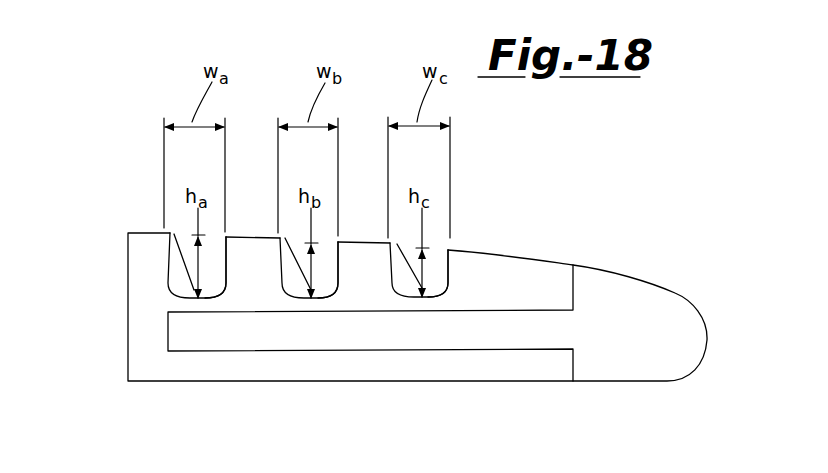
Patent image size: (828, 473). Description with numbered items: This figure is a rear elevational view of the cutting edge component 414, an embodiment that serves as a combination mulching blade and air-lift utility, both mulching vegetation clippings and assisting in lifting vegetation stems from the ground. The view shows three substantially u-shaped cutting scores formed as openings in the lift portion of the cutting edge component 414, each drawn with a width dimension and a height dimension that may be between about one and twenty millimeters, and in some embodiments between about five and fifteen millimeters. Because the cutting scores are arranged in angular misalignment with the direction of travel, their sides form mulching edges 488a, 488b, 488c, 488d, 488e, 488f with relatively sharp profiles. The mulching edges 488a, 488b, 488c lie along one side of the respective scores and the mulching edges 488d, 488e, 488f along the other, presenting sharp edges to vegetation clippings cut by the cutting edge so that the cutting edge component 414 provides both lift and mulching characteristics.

The cutting edge component 414 is at (596, 252).
The mulching edge 488a is at (172, 259).
The mulching edge 488b is at (286, 256).
The mulching edge 488c is at (398, 260).
The mulching edge 488d is at (228, 282).
The mulching edge 488e is at (342, 279).
The mulching edge 488f is at (450, 280).